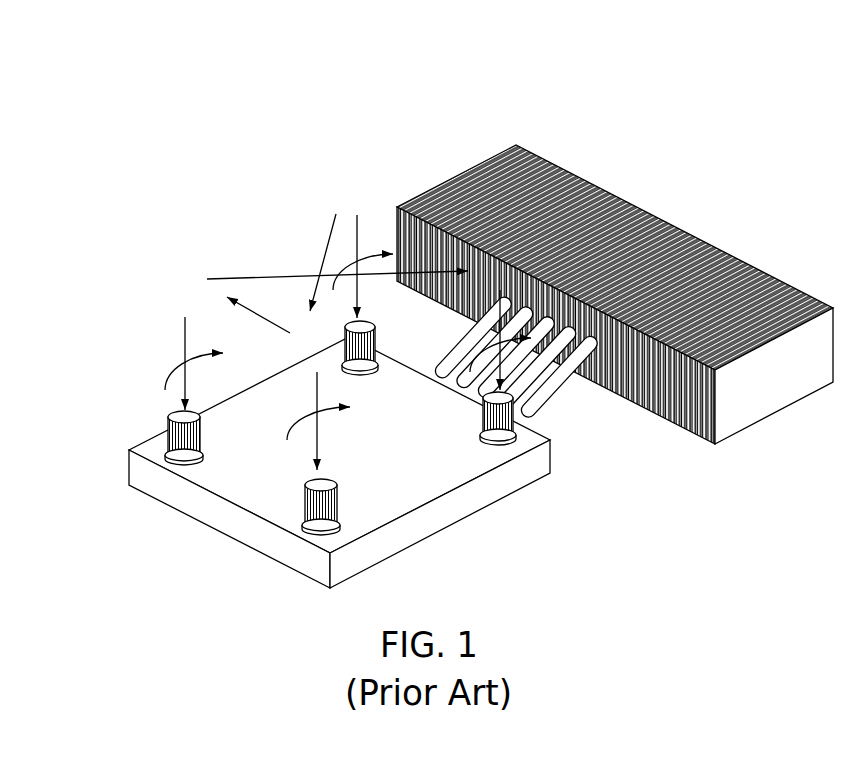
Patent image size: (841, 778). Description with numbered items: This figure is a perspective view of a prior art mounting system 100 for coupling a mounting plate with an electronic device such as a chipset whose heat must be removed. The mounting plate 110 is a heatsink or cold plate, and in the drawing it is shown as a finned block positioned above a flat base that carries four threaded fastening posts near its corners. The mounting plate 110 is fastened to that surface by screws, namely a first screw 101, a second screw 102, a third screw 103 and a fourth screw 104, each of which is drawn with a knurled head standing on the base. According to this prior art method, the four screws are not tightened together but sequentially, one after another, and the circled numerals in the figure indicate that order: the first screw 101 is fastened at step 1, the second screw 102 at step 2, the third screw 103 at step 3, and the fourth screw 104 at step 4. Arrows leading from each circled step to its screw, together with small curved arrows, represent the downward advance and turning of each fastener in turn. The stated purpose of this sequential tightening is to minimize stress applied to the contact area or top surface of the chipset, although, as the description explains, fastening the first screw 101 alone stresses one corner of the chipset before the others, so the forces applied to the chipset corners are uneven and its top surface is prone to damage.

The prior art mounting system 100 is at (273, 107).
The first screw 101 is at (378, 330).
The second screw 102 is at (515, 418).
The third screw 103 is at (304, 511).
The fourth screw 104 is at (166, 418).
The mounting plate 110 is at (192, 520).
The first fastening order step 1 is at (351, 243).
The second fastening order step 2 is at (288, 383).
The third fastening order step 3 is at (314, 339).
The fourth fastening order step 4 is at (500, 318).